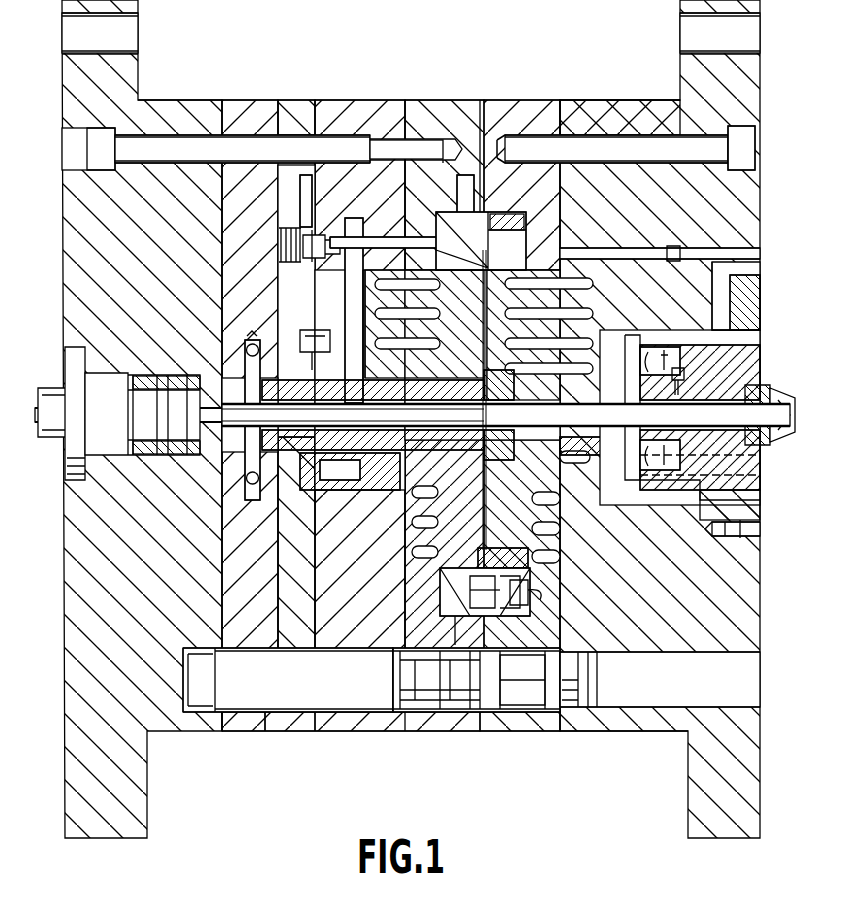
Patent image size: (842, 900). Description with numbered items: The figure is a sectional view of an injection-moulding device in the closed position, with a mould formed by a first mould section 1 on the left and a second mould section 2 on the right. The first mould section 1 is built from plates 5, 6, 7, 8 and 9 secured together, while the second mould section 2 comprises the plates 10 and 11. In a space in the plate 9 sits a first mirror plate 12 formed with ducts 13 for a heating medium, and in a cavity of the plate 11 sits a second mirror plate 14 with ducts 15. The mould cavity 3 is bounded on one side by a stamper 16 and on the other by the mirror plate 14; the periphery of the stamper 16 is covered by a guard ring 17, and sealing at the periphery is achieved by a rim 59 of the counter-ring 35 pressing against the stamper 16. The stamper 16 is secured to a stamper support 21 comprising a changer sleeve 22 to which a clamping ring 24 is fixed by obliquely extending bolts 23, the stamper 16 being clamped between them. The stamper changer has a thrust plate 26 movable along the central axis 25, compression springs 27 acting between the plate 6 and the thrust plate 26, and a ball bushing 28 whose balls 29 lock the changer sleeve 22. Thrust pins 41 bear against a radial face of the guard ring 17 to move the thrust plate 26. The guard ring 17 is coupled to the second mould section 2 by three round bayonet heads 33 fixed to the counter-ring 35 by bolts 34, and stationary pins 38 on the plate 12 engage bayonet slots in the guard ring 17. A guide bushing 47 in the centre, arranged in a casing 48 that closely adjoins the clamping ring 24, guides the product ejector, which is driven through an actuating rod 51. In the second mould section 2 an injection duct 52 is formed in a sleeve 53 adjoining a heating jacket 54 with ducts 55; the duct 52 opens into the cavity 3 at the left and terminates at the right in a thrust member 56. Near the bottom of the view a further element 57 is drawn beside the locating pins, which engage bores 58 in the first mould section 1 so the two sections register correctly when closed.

The first mould section 1 is at (160, 99).
The second mould section 2 is at (595, 99).
The mould cavity 3 is at (487, 518).
The plate 5 is at (133, 779).
The plate 6 is at (250, 724).
The plate 7 is at (300, 724).
The plate 8 is at (350, 724).
The plate 9 is at (468, 705).
The plate 10 is at (701, 772).
The plate 11 is at (555, 700).
The first mirror plate 12 is at (423, 549).
The ducts 13 is at (425, 337).
The second mirror plate 14 is at (545, 586).
The ducts 15 is at (556, 511).
The stamper 16 is at (445, 522).
The guard ring 17 is at (460, 631).
The stamper support 21 is at (433, 456).
The changer sleeve 22 is at (412, 388).
The bolts 23 is at (450, 388).
The clamping ring 24 is at (488, 372).
The central axis 25 is at (603, 412).
The thrust plate 26 is at (322, 232).
The compression springs 27 is at (292, 222).
The ball bushing 28 is at (335, 347).
The balls 29 is at (372, 362).
The bayonet heads 33 is at (472, 603).
The bolts 34 is at (532, 598).
The counter-ring 35 is at (497, 612).
The stationary pins 38 is at (457, 190).
The thrust pins 41 is at (382, 235).
The guide bushing 47 is at (222, 462).
The casing 48 is at (285, 464).
The actuating rod 51 is at (52, 432).
The injection duct 52 is at (745, 360).
The sleeve 53 is at (618, 440).
The heating jacket 54 is at (520, 352).
The ducts 55 is at (555, 350).
The thrust member 56 is at (775, 440).
The ring 57 is at (520, 695).
The bores 58 is at (400, 695).
The rim 59 is at (484, 551).